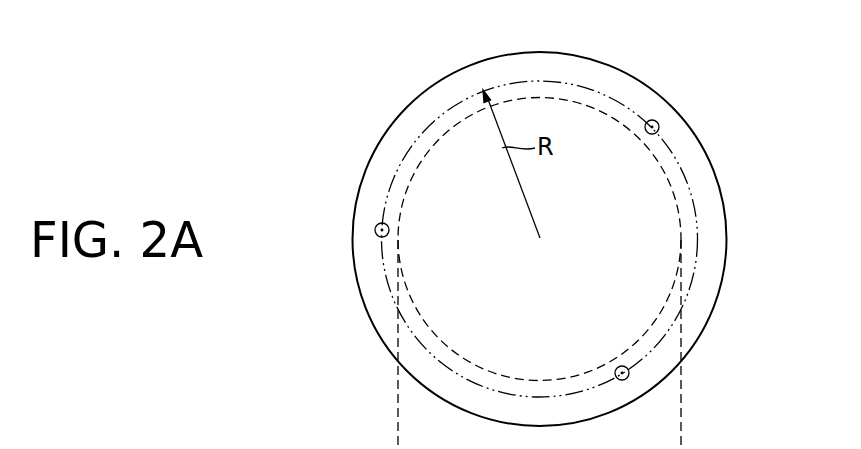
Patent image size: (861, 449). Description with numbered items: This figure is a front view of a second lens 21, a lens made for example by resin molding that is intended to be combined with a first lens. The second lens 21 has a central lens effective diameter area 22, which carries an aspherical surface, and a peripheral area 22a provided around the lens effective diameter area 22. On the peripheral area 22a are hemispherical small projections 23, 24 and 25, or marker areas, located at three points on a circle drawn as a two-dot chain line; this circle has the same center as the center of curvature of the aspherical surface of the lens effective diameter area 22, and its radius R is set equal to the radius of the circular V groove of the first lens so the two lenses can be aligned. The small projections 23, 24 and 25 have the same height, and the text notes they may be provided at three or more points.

The second lens 21 is at (731, 177).
The lens effective diameter area 22 is at (615, 148).
The peripheral area 22a is at (686, 227).
The small projection 23 is at (375, 230).
The small projection 24 is at (659, 125).
The small projection 25 is at (628, 380).